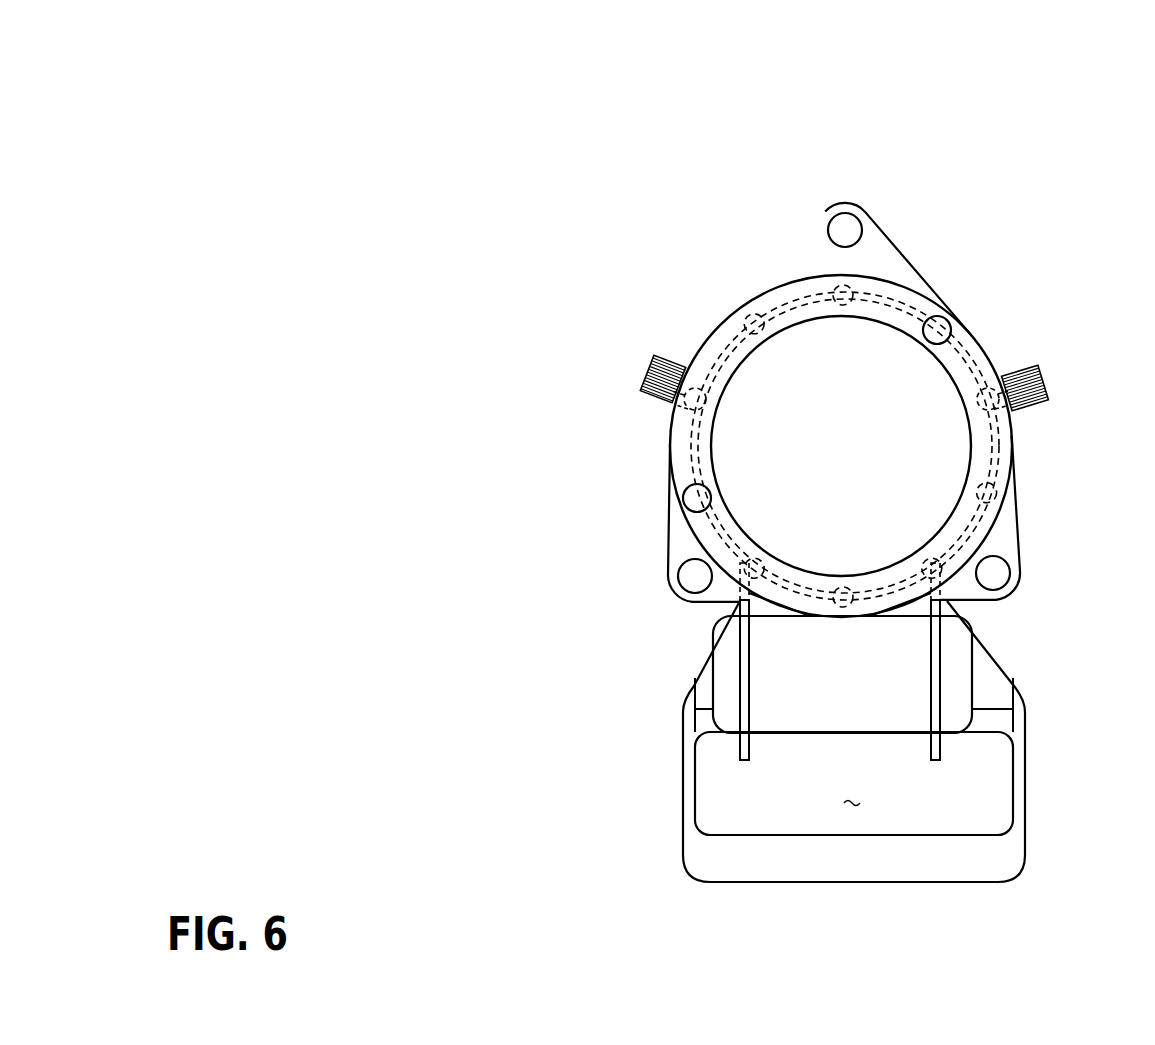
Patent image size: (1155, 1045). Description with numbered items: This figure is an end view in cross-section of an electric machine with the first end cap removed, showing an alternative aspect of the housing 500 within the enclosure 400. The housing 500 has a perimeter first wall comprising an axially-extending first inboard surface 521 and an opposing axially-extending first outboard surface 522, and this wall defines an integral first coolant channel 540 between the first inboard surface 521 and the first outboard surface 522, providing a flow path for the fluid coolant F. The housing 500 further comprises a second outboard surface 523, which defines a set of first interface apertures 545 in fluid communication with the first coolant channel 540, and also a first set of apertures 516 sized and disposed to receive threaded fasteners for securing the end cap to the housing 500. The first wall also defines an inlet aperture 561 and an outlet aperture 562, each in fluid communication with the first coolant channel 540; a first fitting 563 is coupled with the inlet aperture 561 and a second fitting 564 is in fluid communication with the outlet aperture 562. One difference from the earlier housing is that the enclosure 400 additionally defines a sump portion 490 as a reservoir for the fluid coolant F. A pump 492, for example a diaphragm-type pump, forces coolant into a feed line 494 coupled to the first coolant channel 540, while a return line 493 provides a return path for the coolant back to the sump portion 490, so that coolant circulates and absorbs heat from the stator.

The enclosure 400 is at (618, 118).
The housing 500 is at (738, 238).
The first outboard surface 522 is at (1022, 526).
The first set of apertures 516 is at (710, 575).
The second outboard surface 523 is at (881, 282).
The first inboard surface 521 is at (731, 377).
The first coolant channel 540 is at (780, 291).
The first interface apertures 545 is at (943, 322).
The inlet aperture 561 is at (668, 418).
The outlet aperture 562 is at (1020, 415).
The first fitting 563 is at (653, 372).
The second fitting 564 is at (1042, 383).
The sump portion 490 is at (989, 740).
The pump 492 is at (864, 701).
The return line 493 is at (740, 665).
The feed line 494 is at (942, 653).